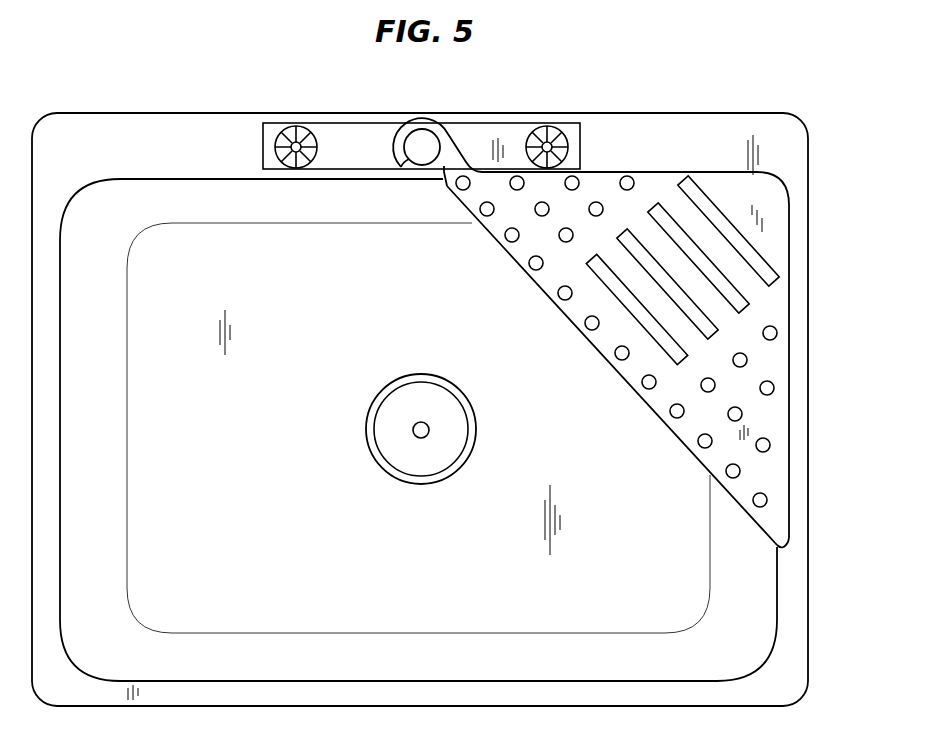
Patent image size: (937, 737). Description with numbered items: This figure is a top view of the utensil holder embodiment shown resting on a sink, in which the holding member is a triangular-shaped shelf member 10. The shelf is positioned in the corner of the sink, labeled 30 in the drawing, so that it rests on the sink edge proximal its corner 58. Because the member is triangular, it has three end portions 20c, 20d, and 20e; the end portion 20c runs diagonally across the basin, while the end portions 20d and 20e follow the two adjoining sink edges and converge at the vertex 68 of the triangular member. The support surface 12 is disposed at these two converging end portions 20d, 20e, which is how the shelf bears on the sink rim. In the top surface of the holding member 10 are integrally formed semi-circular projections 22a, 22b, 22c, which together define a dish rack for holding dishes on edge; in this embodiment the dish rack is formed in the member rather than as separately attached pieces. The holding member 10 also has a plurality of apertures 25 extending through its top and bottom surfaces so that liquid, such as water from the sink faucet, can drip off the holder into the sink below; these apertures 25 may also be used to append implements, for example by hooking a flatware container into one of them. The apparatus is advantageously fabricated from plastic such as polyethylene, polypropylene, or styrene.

The holding member 10 is at (638, 338).
The support surface 12 is at (687, 142).
The end portion 20c is at (583, 345).
The end portion 20d is at (601, 142).
The end portion 20e is at (792, 242).
The semi-circular projection 22a is at (778, 270).
The semi-circular projection 22b is at (747, 308).
The semi-circular projection 22c is at (718, 332).
The apertures 25 is at (534, 209).
The sink 30 is at (439, 385).
The corner 58 is at (783, 137).
The vertex 68 is at (778, 178).